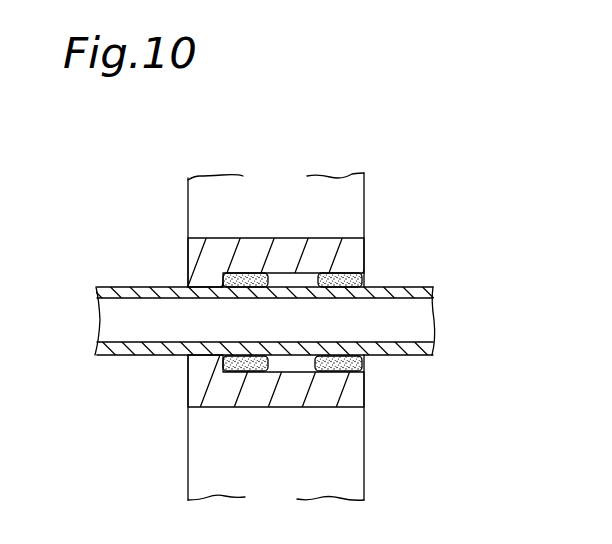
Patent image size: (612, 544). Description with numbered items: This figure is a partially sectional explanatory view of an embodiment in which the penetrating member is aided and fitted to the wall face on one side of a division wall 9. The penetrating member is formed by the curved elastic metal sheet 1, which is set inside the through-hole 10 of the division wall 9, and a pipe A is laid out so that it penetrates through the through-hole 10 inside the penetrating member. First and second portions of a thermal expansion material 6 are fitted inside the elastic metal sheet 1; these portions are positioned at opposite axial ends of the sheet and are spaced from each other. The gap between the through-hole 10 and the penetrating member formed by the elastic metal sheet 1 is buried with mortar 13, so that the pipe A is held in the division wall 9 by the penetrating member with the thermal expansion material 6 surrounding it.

The elastic metal sheet 1 is at (345, 238).
The thermal expansion material 6 is at (245, 372).
The division wall 9 is at (364, 190).
The through-hole 10 is at (237, 238).
The mortar 13 is at (195, 260).
The pipe A is at (413, 289).